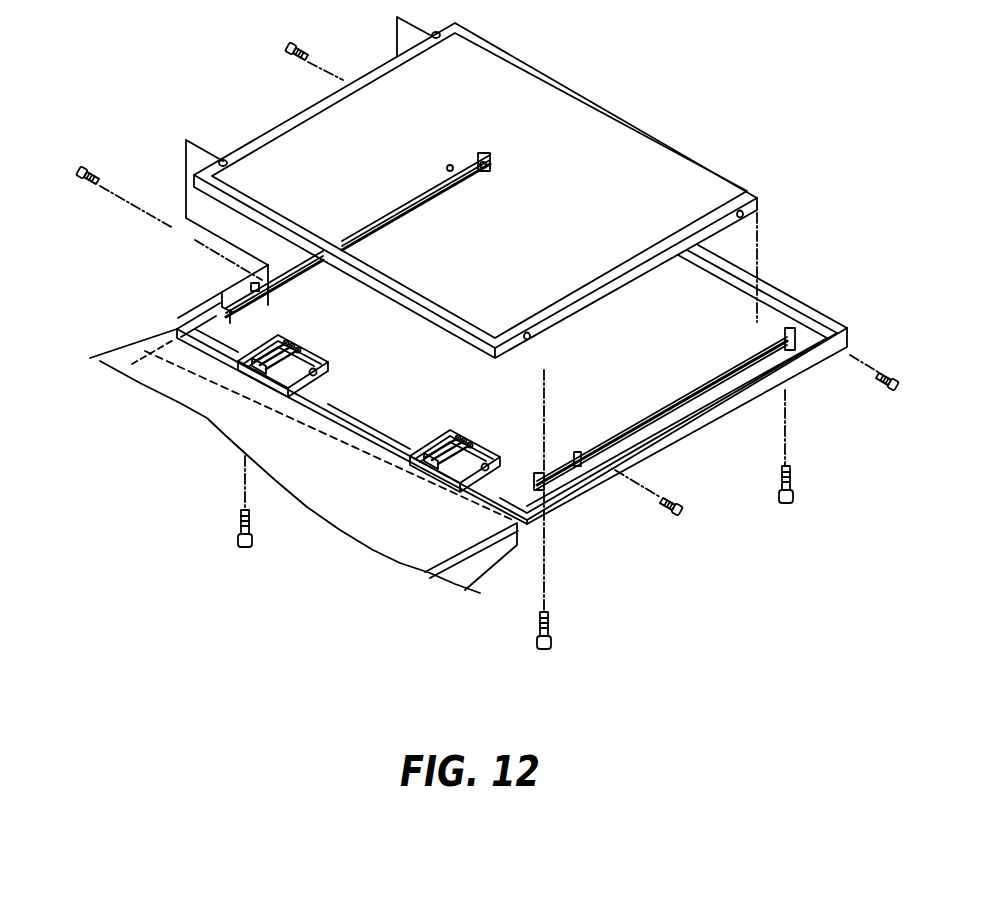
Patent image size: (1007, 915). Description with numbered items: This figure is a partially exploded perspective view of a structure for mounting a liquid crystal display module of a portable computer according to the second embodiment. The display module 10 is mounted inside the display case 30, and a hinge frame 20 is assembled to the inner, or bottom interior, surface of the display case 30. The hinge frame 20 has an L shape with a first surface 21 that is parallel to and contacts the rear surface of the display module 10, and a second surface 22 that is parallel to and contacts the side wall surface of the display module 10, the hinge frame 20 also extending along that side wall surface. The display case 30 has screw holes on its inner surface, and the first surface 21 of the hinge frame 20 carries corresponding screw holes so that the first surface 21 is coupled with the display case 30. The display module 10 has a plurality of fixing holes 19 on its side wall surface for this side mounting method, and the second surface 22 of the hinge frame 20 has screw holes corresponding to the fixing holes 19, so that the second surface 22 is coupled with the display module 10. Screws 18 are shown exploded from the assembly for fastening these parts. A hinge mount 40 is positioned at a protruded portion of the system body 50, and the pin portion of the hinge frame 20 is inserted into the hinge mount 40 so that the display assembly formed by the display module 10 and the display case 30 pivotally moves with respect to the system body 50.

The display module 10 is at (647, 93).
The screw 18 is at (288, 50).
The fixing holes 19 is at (524, 341).
The hinge frame 20 is at (750, 347).
The first surface 21 is at (283, 288).
The second surface 22 is at (252, 289).
The display case 30 is at (660, 382).
The hinge mount 40 is at (254, 366).
The system body 50 is at (137, 338).